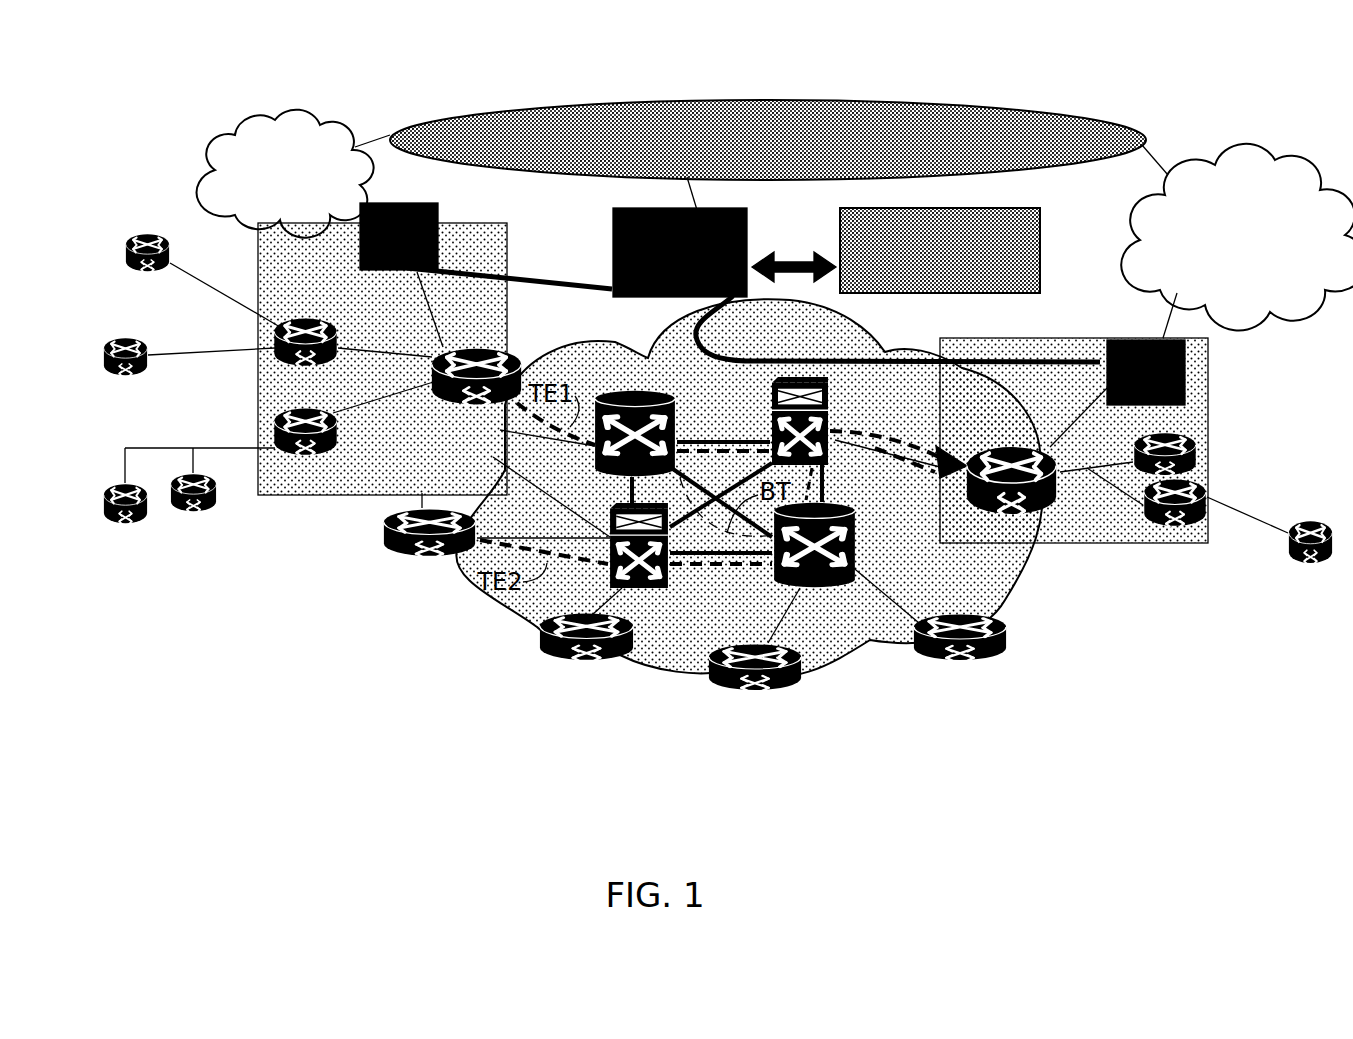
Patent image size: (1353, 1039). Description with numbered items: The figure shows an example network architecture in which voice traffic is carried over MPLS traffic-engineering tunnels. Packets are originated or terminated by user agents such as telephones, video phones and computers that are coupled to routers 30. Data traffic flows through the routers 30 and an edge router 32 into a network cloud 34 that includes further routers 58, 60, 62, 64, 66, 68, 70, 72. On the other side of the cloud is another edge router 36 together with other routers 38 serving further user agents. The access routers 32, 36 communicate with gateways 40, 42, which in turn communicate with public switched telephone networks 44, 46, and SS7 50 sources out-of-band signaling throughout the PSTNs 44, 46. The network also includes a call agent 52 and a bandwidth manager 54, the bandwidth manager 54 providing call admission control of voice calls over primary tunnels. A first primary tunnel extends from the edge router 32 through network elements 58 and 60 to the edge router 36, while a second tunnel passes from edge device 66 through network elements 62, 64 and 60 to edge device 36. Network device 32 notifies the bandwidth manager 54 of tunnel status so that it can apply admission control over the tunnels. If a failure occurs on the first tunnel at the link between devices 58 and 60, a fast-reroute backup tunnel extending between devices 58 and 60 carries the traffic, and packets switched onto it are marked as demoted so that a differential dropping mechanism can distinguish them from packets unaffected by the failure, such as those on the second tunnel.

The routers 30 is at (122, 337).
The edge router 32 is at (452, 398).
The network cloud 34 is at (600, 350).
The edge router 36 is at (1023, 517).
The routers 38 is at (1190, 443).
The gateway 40 is at (412, 205).
The gateway 42 is at (1185, 367).
The public switched telephone network 44 is at (297, 115).
The public switched telephone network 46 is at (1273, 152).
The SS7 50 is at (787, 100).
The call agent 52 is at (633, 215).
The bandwidth manager 54 is at (1040, 226).
The router 58 is at (630, 390).
The router 60 is at (772, 418).
The router 62 is at (670, 578).
The router 64 is at (843, 507).
The router 66 is at (405, 556).
The router 68 is at (538, 638).
The router 70 is at (770, 693).
The router 72 is at (970, 667).